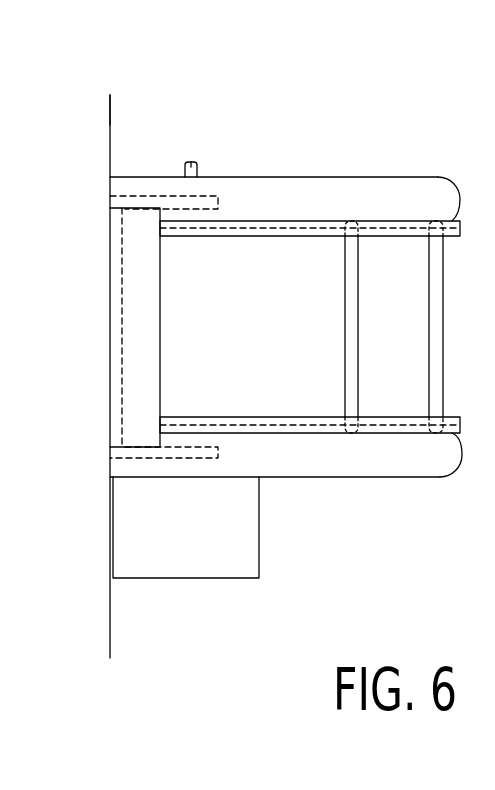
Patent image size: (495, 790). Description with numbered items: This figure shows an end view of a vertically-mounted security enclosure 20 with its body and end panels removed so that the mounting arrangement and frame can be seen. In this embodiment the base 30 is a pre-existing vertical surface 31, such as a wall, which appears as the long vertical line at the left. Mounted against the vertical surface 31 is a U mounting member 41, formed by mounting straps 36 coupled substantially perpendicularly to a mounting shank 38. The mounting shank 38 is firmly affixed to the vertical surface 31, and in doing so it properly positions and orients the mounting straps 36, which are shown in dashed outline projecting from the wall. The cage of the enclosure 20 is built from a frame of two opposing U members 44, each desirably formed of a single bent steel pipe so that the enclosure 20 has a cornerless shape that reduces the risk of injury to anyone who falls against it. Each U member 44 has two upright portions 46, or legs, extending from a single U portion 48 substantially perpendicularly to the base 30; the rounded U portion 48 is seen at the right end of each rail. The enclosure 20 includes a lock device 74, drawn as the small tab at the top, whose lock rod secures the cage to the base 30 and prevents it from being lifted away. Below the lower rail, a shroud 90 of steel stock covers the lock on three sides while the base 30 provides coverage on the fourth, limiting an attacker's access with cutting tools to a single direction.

The security enclosure 20 is at (225, 697).
The base 30 is at (110, 138).
The vertical surface 31 is at (110, 107).
The mounting straps 36 is at (147, 203).
The mounting shank 38 is at (115, 318).
The U mounting member 41 is at (152, 208).
The U members 44 is at (352, 453).
The upright portions 46 is at (263, 197).
The U portion 48 is at (398, 195).
The lock device 74 is at (192, 157).
The shroud 90 is at (142, 552).